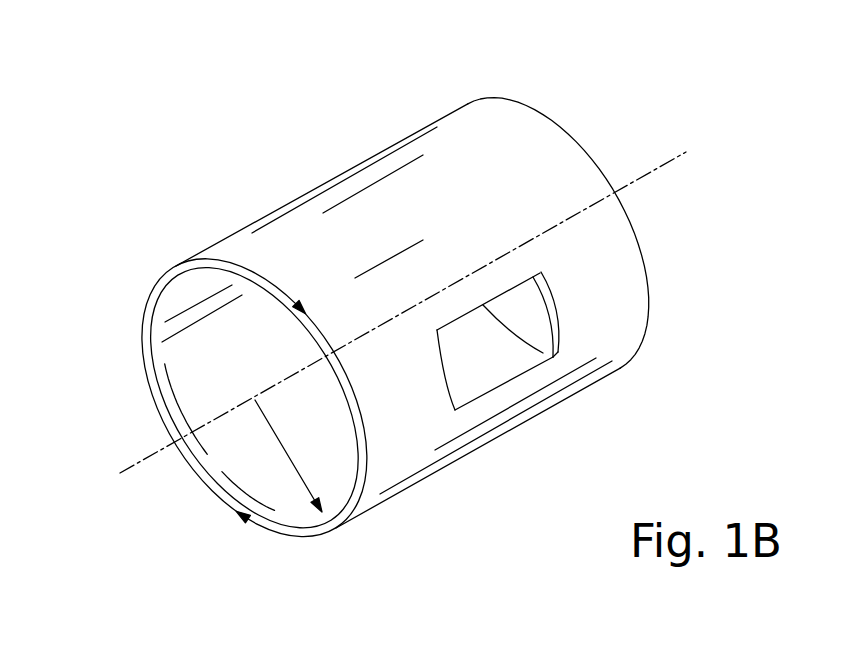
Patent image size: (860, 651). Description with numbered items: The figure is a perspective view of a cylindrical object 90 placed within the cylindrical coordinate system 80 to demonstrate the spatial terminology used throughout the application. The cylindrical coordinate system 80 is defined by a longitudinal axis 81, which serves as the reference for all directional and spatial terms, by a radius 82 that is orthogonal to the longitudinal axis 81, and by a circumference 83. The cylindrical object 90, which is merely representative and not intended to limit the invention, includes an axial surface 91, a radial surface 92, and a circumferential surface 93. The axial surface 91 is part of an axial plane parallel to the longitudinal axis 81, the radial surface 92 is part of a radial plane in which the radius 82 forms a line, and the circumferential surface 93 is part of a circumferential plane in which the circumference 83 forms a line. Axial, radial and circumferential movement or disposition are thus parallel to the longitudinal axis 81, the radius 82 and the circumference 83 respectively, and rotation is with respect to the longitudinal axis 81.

The cylindrical coordinate system 80 is at (578, 118).
The longitudinal axis 81 is at (130, 472).
The radius 82 is at (340, 505).
The circumference 83 is at (153, 293).
The cylindrical object 90 is at (439, 102).
The axial surface 91 is at (520, 362).
The radial surface 92 is at (271, 525).
The circumferential surface 93 is at (371, 204).